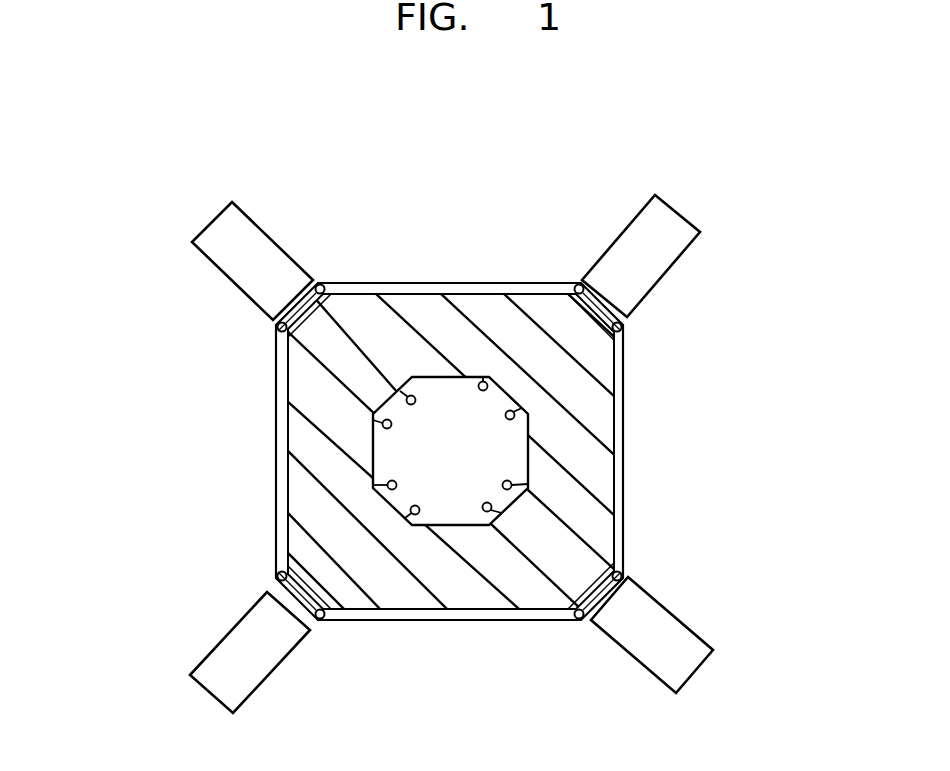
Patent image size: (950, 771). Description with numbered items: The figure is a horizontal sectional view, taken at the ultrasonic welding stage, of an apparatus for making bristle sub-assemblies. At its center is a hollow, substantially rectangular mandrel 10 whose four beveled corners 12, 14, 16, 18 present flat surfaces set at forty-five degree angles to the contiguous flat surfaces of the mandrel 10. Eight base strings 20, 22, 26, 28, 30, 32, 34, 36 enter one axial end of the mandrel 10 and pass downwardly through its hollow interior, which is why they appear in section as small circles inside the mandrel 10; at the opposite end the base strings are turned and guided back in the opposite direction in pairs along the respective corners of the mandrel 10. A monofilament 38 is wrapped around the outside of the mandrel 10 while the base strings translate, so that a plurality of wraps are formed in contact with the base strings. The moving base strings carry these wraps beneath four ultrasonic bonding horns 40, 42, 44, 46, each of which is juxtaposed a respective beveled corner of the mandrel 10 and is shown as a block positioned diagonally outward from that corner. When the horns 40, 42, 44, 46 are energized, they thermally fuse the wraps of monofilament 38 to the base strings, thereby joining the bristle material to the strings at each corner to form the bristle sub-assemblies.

The mandrel 10 is at (642, 443).
The beveled corner 12 is at (320, 288).
The beveled corner 14 is at (612, 295).
The beveled corner 16 is at (287, 616).
The beveled corner 18 is at (604, 600).
The base string 20 is at (383, 427).
The base string 22 is at (406, 397).
The base string 26 is at (484, 381).
The base string 28 is at (513, 410).
The base string 30 is at (528, 484).
The base string 32 is at (502, 513).
The base string 34 is at (387, 485).
The base string 36 is at (411, 513).
The monofilament 38 is at (626, 393).
The ultrasonic bonding horn 40 is at (686, 221).
The ultrasonic bonding horn 42 is at (697, 667).
The ultrasonic bonding horn 44 is at (207, 691).
The ultrasonic bonding horn 46 is at (210, 223).